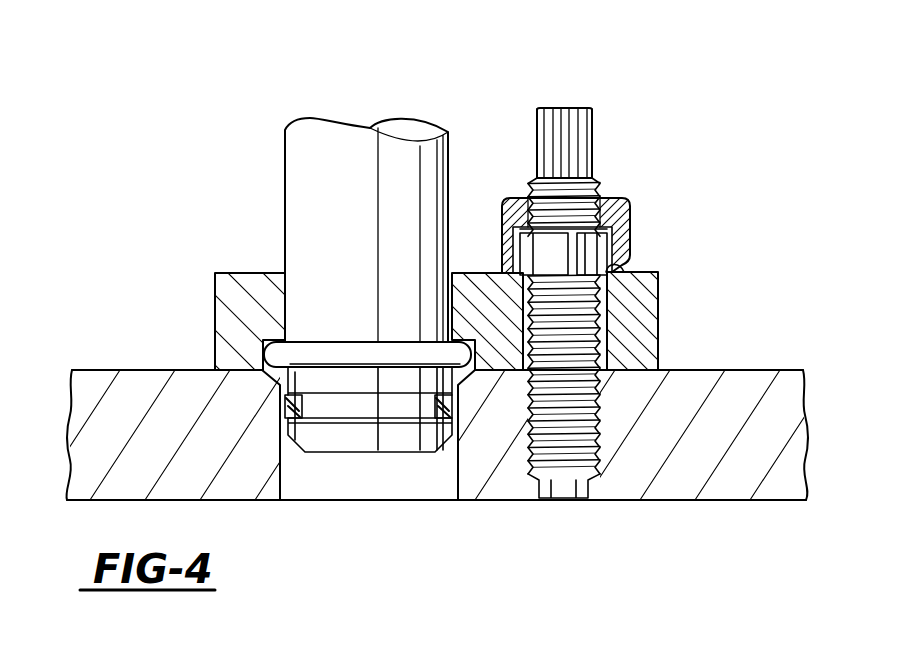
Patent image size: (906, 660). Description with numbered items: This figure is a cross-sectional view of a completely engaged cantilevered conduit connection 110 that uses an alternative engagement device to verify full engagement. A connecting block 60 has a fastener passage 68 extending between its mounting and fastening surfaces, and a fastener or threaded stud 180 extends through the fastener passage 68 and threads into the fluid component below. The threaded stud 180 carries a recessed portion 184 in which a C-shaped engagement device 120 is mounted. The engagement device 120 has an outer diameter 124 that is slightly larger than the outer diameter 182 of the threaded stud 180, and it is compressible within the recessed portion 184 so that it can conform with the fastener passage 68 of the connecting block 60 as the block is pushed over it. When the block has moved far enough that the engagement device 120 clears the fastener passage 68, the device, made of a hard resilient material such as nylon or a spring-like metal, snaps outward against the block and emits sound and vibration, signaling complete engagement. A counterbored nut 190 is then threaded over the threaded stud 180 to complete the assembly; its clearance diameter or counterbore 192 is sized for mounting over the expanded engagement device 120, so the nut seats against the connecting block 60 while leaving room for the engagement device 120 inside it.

The mounting assembly 110 is at (158, 227).
The connecting block 60 is at (270, 272).
The fastener passage 68 is at (605, 300).
The counterbored nut 190 is at (510, 198).
The recessed portion 184 is at (639, 184).
The counterbore 192 is at (616, 277).
The engagement device 120 is at (605, 252).
The outer diameter 124 is at (607, 242).
The threaded stud 180 is at (592, 120).
The outer diameter 182 is at (600, 186).